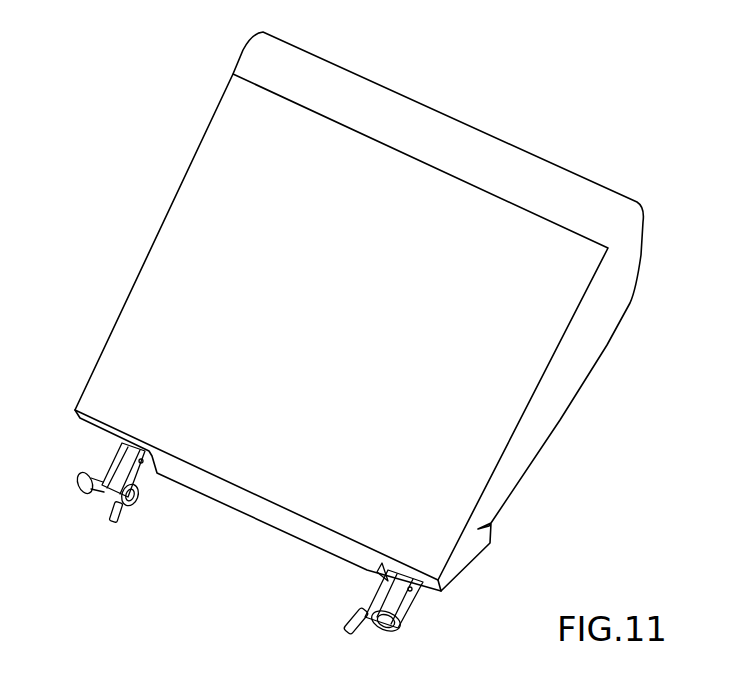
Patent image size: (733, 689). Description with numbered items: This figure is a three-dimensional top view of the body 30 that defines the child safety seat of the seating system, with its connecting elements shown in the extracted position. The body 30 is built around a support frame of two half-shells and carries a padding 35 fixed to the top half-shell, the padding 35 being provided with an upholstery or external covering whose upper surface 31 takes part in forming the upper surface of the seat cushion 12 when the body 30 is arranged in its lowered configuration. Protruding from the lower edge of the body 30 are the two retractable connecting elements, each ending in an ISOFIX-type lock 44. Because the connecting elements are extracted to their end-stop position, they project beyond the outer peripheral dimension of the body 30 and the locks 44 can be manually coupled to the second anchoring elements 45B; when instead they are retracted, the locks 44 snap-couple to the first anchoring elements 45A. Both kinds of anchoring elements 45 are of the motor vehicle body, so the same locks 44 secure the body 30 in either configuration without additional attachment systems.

The seat cushion 12 is at (344, 360).
The body 30 is at (415, 197).
The upper surface 31 is at (190, 210).
The padding 35 is at (508, 353).
The locks 44 is at (110, 465).
The anchoring elements 45 is at (125, 502).
The first anchoring elements 45A is at (358, 623).
The second anchoring elements 45B is at (128, 508).